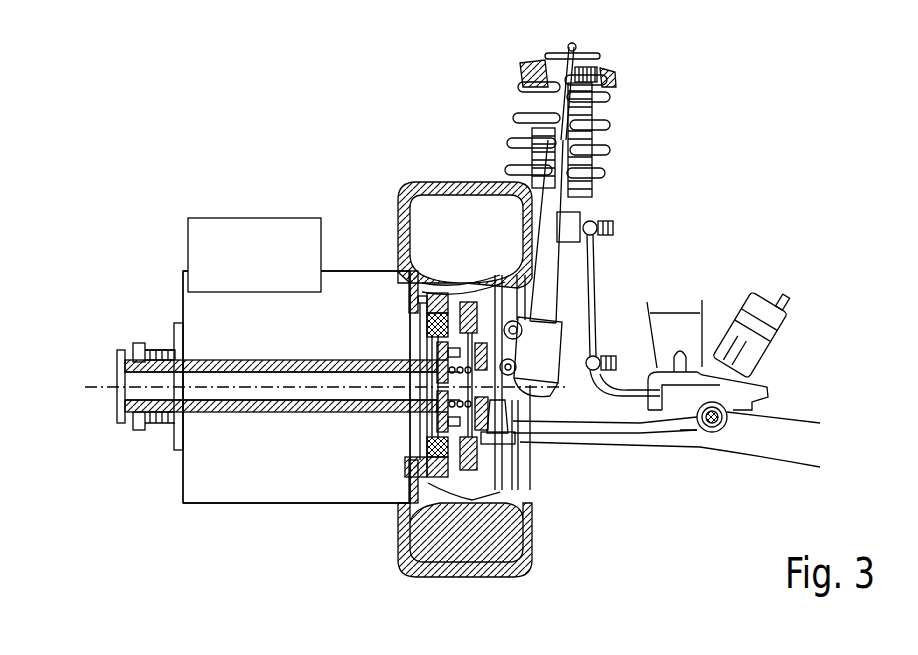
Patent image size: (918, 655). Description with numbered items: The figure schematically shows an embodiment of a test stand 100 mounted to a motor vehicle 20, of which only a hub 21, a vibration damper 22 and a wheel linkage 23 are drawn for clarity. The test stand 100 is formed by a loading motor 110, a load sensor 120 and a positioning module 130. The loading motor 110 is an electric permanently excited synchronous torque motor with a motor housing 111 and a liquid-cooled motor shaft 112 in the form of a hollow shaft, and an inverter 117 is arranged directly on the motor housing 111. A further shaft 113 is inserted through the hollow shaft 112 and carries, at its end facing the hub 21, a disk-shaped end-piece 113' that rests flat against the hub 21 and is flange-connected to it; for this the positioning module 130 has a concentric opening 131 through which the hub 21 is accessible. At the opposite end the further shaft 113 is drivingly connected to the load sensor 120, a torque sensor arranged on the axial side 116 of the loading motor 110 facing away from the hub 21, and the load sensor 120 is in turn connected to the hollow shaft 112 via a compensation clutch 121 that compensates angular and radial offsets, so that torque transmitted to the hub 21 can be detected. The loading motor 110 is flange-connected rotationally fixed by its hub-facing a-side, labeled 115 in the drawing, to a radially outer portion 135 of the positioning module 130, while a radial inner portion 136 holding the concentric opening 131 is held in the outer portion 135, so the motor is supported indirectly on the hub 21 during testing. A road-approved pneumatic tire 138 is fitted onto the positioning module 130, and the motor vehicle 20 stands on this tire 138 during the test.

The test stand 100 is at (203, 113).
The loading motor 110 is at (199, 513).
The motor housing 111 is at (328, 292).
The motor shaft 112 is at (283, 400).
The further shaft 113 is at (272, 421).
The disk-shaped end-piece 113' is at (395, 473).
The wheel flange 115 is at (397, 243).
The axial side 116 is at (184, 268).
The inverter 117 is at (262, 230).
The load sensor 120 is at (140, 343).
The compensation clutch 121 is at (163, 348).
The positioning module 130 is at (557, 515).
The concentric opening 131 is at (412, 339).
The radially outer portion 135 is at (422, 482).
The radial inner portion 136 is at (448, 450).
The pneumatic tire 138 is at (502, 543).
The motor vehicle 20 is at (665, 127).
The hub 21 is at (478, 432).
The vibration damper 22 is at (555, 264).
The wheel linkage 23 is at (628, 430).